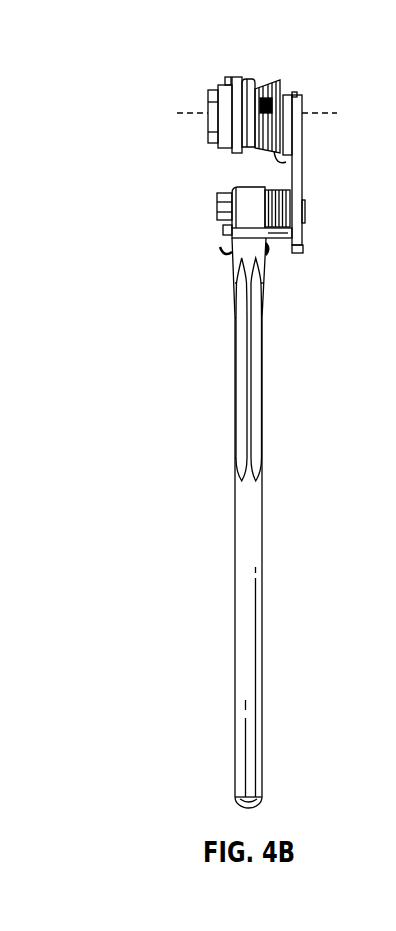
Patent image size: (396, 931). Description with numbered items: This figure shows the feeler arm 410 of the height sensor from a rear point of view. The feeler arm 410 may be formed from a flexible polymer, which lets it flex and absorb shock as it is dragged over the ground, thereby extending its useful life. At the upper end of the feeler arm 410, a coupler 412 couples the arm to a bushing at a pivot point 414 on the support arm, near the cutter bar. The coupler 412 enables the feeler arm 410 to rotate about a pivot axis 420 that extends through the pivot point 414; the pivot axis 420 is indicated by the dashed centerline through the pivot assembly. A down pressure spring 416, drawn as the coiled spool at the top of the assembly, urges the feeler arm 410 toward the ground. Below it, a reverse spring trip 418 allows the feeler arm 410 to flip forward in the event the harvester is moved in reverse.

The feeler arm 410 is at (235, 510).
The coupler 412 is at (303, 157).
The pivot point 414 is at (288, 92).
The down pressure spring 416 is at (258, 87).
The reverse spring trip 418 is at (300, 255).
The pivot axis 420 is at (177, 118).